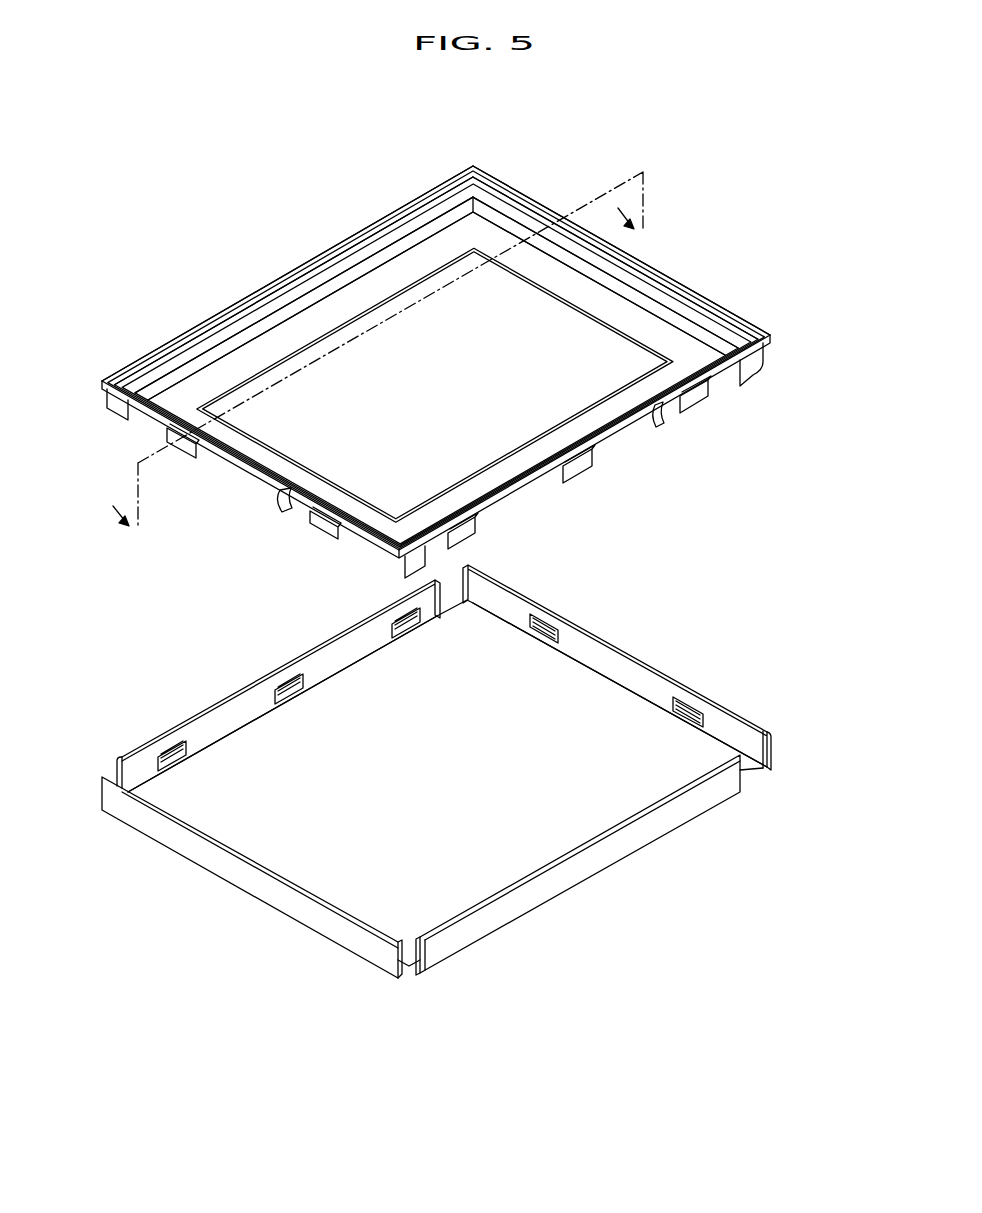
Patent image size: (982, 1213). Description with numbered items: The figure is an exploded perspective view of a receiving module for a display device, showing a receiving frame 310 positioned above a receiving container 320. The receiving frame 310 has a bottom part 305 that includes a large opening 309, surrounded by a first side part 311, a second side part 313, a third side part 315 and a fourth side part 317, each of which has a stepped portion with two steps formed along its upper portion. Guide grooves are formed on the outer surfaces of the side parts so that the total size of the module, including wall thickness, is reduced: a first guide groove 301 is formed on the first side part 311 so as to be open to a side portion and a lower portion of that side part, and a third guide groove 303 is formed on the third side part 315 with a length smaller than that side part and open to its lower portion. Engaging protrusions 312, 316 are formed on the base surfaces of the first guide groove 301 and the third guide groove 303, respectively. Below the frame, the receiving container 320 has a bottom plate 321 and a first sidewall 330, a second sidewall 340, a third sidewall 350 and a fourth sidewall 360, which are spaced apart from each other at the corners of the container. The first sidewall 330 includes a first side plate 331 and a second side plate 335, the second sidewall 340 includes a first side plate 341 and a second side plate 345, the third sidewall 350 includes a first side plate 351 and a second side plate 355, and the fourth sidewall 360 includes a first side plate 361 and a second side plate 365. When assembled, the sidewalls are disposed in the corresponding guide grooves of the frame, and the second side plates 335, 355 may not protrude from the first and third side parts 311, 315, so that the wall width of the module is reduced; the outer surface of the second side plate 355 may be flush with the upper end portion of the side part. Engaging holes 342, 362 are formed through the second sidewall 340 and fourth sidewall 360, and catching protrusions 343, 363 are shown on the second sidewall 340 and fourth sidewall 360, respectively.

The first guide groove 301 is at (280, 490).
The third guide groove 303 is at (658, 415).
The bottom part 305 is at (520, 458).
The opening 309 is at (524, 386).
The receiving frame 310 is at (776, 351).
The first side part 311 is at (243, 463).
The engaging protrusion 312 is at (323, 528).
The second side part 313 is at (698, 292).
The third side part 315 is at (503, 500).
The engaging protrusion 316 is at (700, 397).
The fourth side part 317 is at (255, 293).
The receiving container 320 is at (666, 857).
The bottom plate 321 is at (556, 825).
The first sidewall 330 is at (255, 923).
The first side plate 331 is at (400, 978).
The second side plate 335 is at (393, 977).
The second sidewall 340 is at (649, 713).
The first side plate 341 is at (767, 762).
The engaging hole 342 is at (670, 702).
The catching protrusion 343 is at (690, 698).
The second side plate 345 is at (773, 755).
The third sidewall 350 is at (577, 912).
The first side plate 351 is at (421, 975).
The second side plate 355 is at (425, 970).
The fourth sidewall 360 is at (257, 686).
The first side plate 361 is at (116, 758).
The engaging hole 362 is at (305, 686).
The catching protrusion 363 is at (292, 680).
The second side plate 365 is at (122, 757).